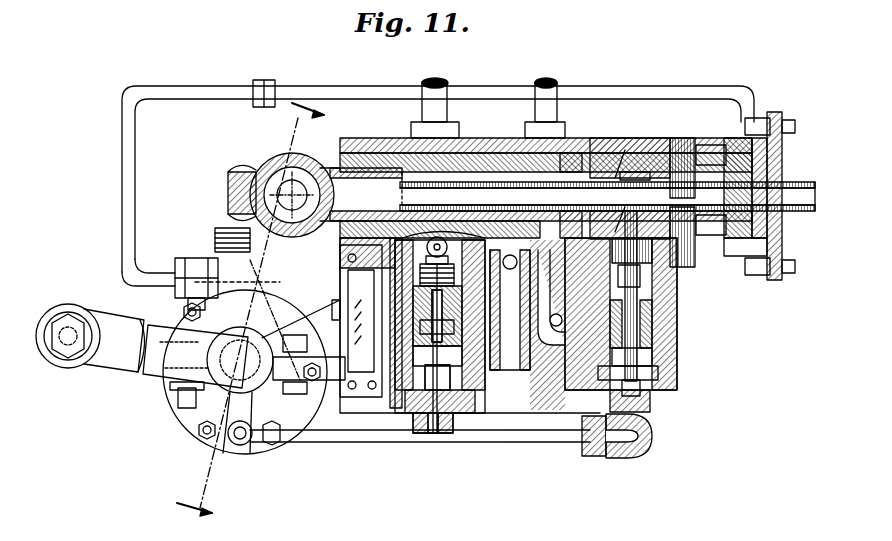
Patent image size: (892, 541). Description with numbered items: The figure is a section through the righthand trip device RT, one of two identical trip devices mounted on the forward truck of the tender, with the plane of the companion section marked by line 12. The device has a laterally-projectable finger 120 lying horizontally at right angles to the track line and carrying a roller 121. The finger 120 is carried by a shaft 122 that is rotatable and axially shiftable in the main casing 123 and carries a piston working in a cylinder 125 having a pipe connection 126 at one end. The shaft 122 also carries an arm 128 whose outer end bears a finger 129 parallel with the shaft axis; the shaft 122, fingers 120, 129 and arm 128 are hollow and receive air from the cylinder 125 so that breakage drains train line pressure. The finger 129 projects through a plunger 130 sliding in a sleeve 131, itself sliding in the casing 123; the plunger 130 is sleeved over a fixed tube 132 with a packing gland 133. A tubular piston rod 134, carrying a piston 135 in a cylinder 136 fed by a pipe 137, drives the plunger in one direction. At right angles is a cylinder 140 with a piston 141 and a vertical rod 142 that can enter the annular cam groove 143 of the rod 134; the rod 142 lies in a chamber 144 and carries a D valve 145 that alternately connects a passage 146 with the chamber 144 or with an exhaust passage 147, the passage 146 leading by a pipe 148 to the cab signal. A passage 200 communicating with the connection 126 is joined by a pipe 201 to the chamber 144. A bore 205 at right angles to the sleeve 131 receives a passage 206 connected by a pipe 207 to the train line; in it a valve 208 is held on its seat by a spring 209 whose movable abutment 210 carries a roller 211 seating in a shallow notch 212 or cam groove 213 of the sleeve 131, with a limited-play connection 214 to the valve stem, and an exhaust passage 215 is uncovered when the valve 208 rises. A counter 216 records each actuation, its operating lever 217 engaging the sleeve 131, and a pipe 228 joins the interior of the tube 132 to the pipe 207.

The section line 12— 12 is at (250, 316).
The laterally-projectable finger 120 is at (74, 364).
The roller 121 is at (93, 311).
The shaft 122 is at (270, 446).
The main casing 123 is at (282, 318).
The cylinder 125 is at (178, 428).
The pipe connection 126 is at (222, 230).
The arm 128 is at (210, 262).
The finger 129 is at (262, 180).
The plunger 130 is at (292, 153).
The sleeve 131 is at (478, 152).
The fixed tube 132 is at (612, 172).
The packing gland 133 is at (566, 160).
The tubular piston rod 134 is at (670, 160).
The piston 135 is at (720, 258).
The cylinder 136 is at (737, 262).
The pipe 137 is at (752, 100).
The cylinder 140 is at (640, 282).
The piston 141 is at (650, 262).
The piston rod 142 is at (658, 372).
The annular cam groove 143 is at (640, 185).
The chamber 144 is at (652, 356).
The D valve 145 is at (622, 326).
The passage 146 is at (512, 374).
The exhaust passage 147 is at (563, 372).
The pipe 148 is at (553, 85).
The passage 200 is at (244, 445).
The pipe 201 is at (500, 438).
The bore 205 is at (402, 430).
The passage 206 is at (424, 434).
The pipe 207 is at (442, 85).
The valve 208 is at (462, 356).
The spring 209 is at (456, 326).
The movable abutment 210 is at (460, 303).
The roller 211 is at (450, 250).
The shallow notch 212 is at (412, 168).
The cam groove 213 is at (466, 244).
The connection 214 is at (455, 280).
The exhaust passage 215 is at (372, 390).
The counter 216 is at (336, 392).
The operating lever 217 is at (282, 292).
The pipe 228 is at (812, 182).
The righthand trip device RT is at (544, 428).